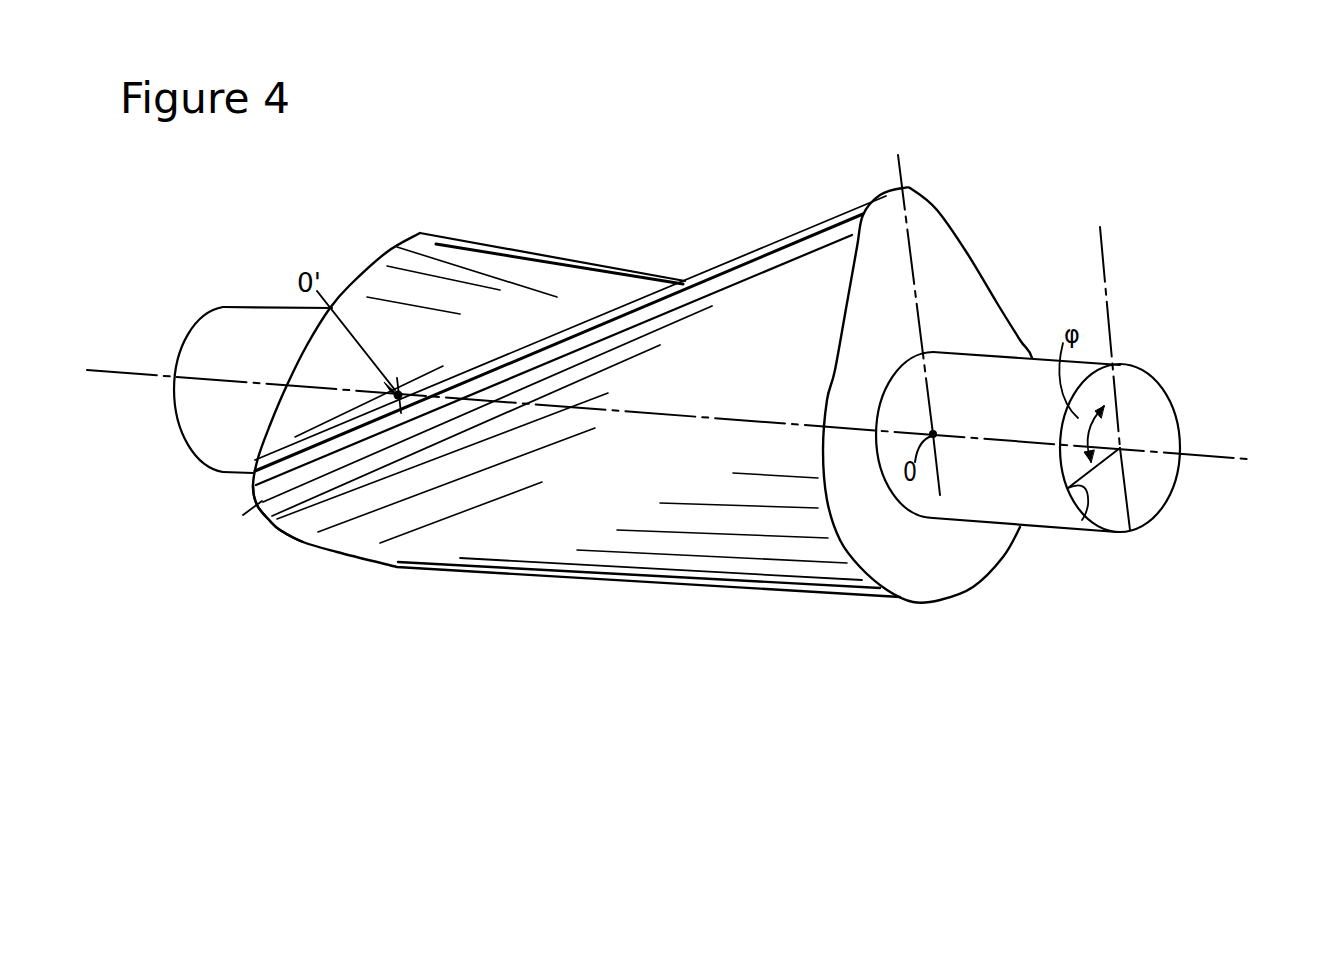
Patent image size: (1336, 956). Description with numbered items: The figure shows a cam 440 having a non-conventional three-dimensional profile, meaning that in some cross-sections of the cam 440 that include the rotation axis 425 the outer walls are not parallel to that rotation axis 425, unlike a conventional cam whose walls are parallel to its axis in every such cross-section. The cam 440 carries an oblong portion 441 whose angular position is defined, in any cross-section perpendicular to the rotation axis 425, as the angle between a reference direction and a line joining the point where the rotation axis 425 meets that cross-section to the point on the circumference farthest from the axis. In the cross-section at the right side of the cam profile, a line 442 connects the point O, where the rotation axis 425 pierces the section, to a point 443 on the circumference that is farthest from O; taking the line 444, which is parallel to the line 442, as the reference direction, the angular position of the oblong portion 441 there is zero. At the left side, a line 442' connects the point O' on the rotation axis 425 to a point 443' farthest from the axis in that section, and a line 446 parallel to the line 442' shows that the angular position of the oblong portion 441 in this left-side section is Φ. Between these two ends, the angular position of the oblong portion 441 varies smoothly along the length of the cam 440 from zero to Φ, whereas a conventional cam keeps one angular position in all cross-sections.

The cam 440 is at (678, 562).
The oblong portion 441 is at (577, 343).
The line 442 is at (929, 395).
The point 443 is at (945, 310).
The line 442' is at (291, 557).
The point 443' is at (191, 523).
The line 444 is at (1113, 388).
The line 446 is at (1088, 487).
The rotation axis 425 is at (1225, 460).